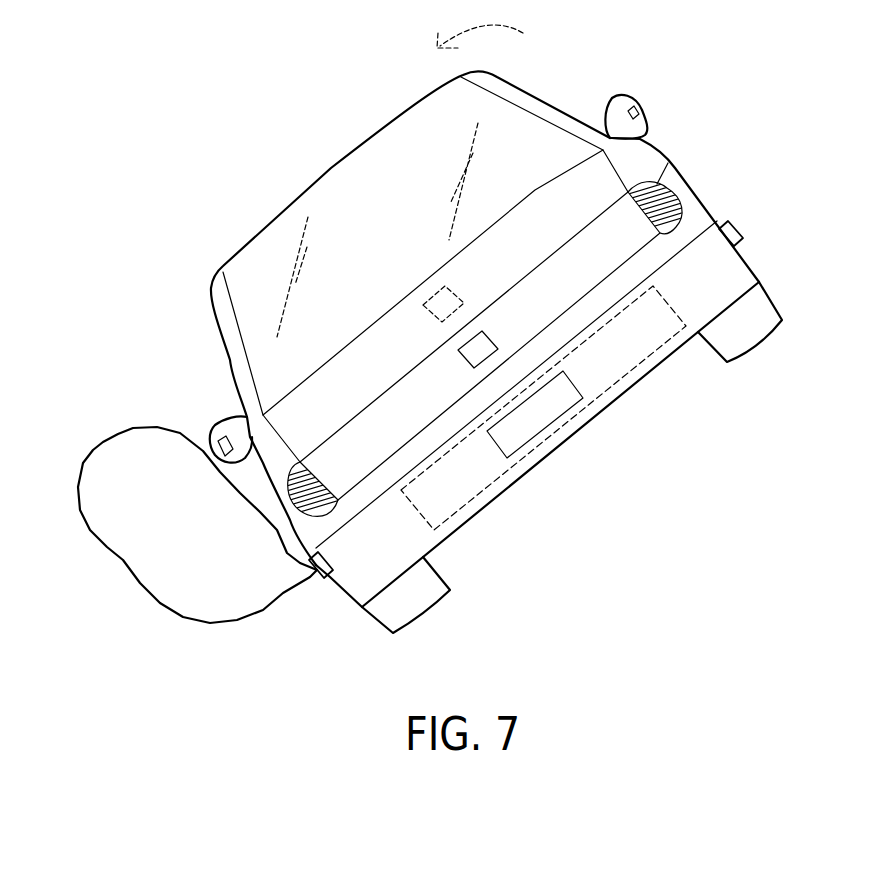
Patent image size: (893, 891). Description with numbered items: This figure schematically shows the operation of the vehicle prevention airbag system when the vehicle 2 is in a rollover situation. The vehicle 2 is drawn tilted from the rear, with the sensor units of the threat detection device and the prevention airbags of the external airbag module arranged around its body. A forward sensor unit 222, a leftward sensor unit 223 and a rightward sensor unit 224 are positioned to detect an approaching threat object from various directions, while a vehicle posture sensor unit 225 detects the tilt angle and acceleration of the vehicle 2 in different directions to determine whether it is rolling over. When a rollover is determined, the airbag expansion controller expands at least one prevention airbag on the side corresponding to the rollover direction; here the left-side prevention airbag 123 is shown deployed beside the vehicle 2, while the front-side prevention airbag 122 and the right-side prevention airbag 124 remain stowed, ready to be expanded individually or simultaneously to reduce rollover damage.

The vehicle 2 is at (322, 164).
The front-side prevention airbag 122 is at (630, 368).
The left-side prevention airbag 123 is at (108, 456).
The right-side prevention airbag 124 is at (732, 232).
The forward sensor unit 222 is at (488, 343).
The leftward sensor unit 223 is at (210, 433).
The rightward sensor unit 224 is at (643, 112).
The vehicle posture sensor unit 225 is at (463, 300).